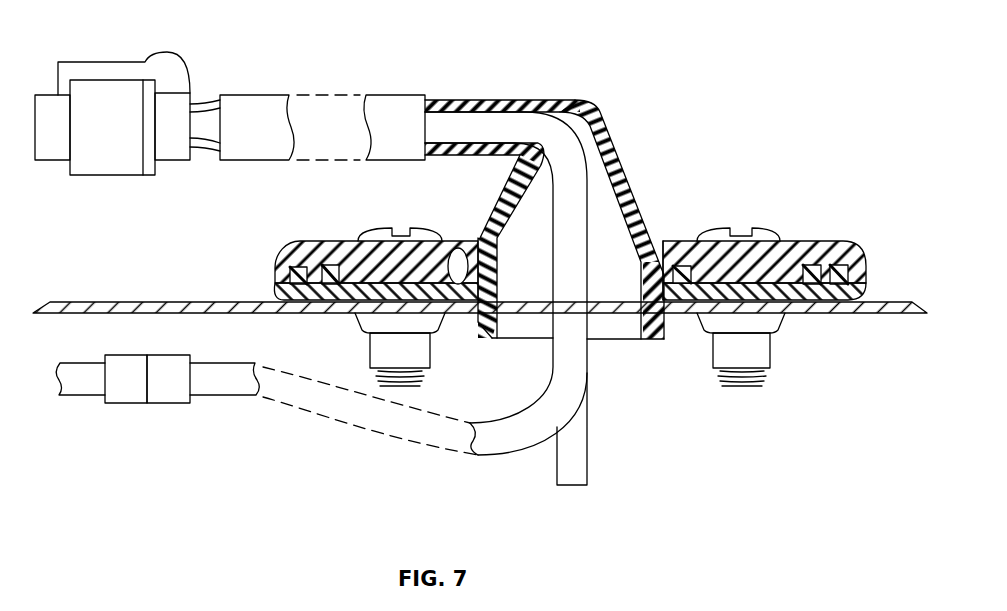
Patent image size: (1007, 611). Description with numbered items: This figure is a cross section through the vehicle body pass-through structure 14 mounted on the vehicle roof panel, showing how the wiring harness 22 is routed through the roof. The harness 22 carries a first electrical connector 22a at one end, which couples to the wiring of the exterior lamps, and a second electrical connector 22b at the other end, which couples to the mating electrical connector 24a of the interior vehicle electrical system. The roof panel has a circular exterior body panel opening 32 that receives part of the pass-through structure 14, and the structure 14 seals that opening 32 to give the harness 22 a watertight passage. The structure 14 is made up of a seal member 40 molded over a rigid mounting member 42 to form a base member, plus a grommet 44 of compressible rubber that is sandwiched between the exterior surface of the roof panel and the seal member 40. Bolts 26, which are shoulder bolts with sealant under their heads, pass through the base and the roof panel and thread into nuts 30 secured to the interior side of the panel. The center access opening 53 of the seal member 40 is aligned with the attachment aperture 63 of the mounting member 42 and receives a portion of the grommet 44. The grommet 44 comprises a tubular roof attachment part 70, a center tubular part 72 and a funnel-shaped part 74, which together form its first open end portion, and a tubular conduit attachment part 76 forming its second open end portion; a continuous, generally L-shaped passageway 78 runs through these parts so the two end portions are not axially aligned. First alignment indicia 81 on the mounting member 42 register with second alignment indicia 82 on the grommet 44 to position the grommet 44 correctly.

The vehicle body pass-through structure 14 is at (823, 196).
The wiring harness 22 is at (594, 356).
The first electrical connector 22a is at (109, 62).
The second electrical connector 22b is at (165, 405).
The mating electrical connector 24a is at (128, 405).
The bolts or fasteners 26 is at (383, 228).
The nuts 30 is at (370, 356).
The exterior body panel opening 32 is at (500, 314).
The seal member 40 is at (276, 292).
The rigid mounting member 42 is at (280, 243).
The grommet 44 is at (613, 125).
The center access opening 53 is at (450, 256).
The attachment aperture 63 is at (641, 295).
The tubular roof attachment part 70 is at (477, 327).
The center tubular part 72 is at (499, 283).
The funnel-shaped part 74 is at (612, 158).
The tubular conduit attachment part 76 is at (472, 99).
The continuous passageway 78 is at (618, 306).
The first alignment indicia 81 is at (678, 228).
The second alignment indicia 82 is at (634, 197).